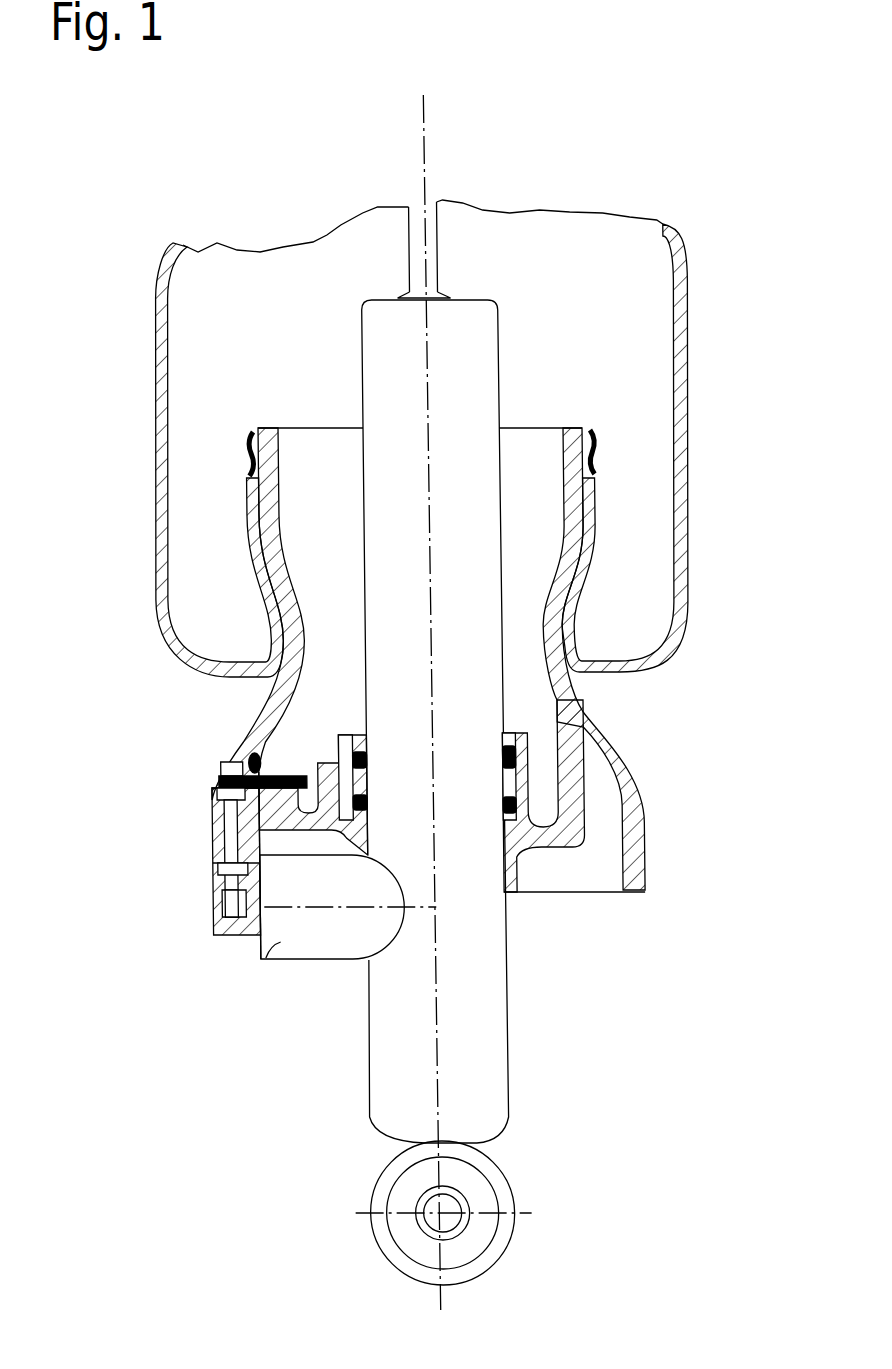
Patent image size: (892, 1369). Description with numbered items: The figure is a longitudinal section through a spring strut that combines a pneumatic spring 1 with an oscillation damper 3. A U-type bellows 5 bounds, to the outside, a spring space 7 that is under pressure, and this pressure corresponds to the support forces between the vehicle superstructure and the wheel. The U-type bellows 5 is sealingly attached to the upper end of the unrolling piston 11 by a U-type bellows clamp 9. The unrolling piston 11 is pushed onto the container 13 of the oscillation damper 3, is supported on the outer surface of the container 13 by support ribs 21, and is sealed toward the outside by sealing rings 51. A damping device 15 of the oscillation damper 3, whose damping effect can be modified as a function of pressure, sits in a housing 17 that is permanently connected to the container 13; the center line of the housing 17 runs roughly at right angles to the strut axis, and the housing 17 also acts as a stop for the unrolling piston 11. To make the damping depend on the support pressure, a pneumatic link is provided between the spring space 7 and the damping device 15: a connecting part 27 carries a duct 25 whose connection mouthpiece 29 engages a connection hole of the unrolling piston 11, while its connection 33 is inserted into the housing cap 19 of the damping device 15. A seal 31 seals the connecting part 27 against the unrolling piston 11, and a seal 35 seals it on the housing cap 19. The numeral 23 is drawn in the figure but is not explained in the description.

The pneumatic spring 1 is at (682, 316).
The oscillation damper 3 is at (512, 982).
The U-type bellows 5 is at (680, 411).
The spring space 7 is at (647, 440).
The U-type bellows clamp 9 is at (593, 448).
The unrolling piston 11 is at (620, 778).
The container 13 is at (490, 1075).
The damping device 15 is at (304, 960).
The housing 17 is at (262, 962).
The housing cap 19 is at (210, 928).
The support ribs 21 is at (528, 537).
The clamp 23 is at (245, 745).
The duct 25 is at (207, 840).
The connecting part 27 is at (212, 805).
The connection mouthpiece 29 is at (220, 790).
The seal 31 is at (232, 770).
The connection 33 is at (207, 895).
The seal 35 is at (207, 873).
The sealing rings 51 is at (540, 847).